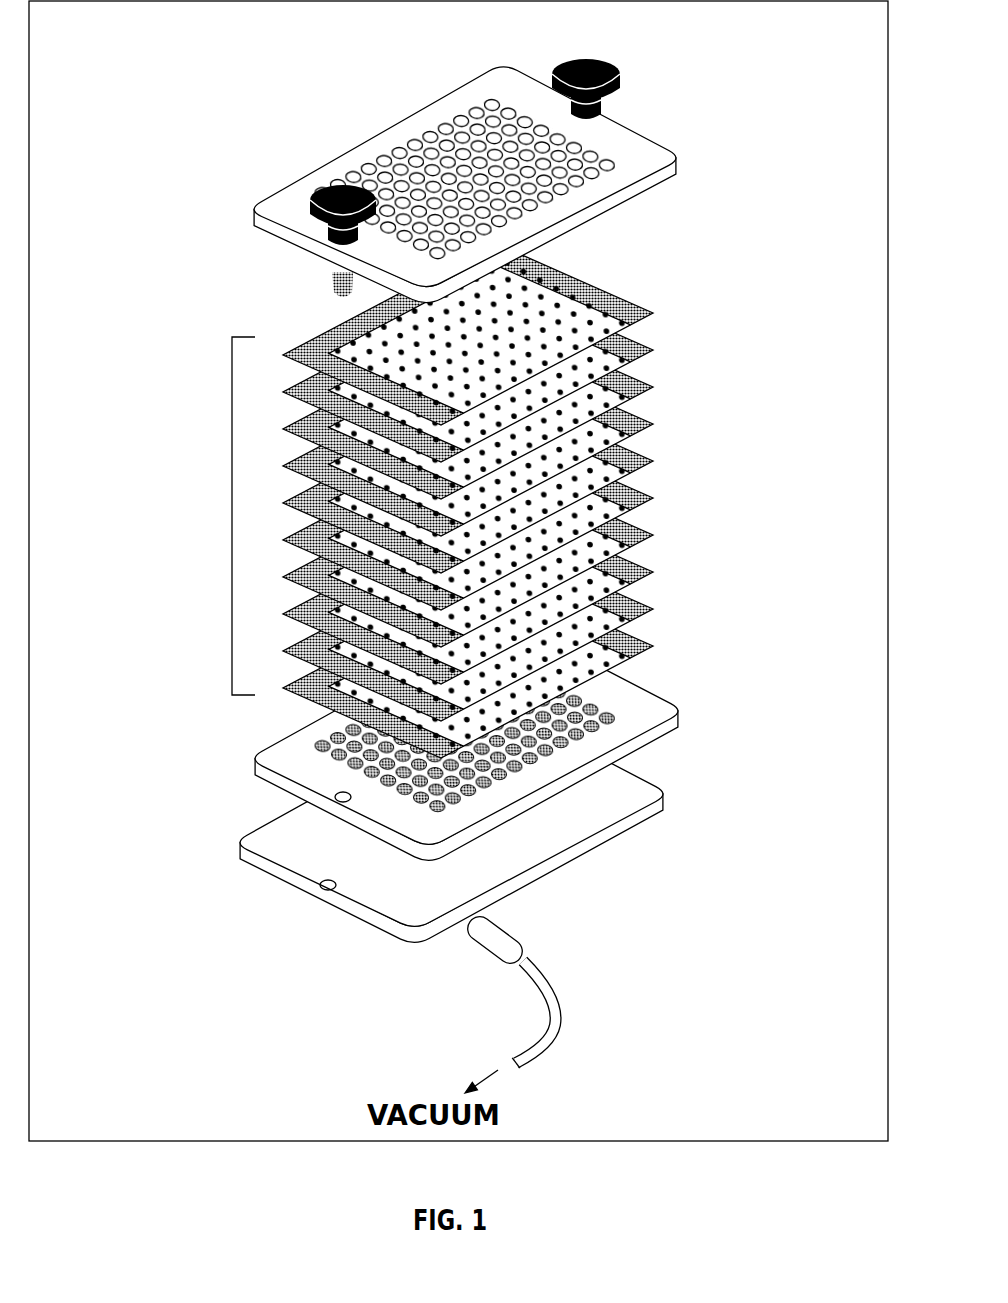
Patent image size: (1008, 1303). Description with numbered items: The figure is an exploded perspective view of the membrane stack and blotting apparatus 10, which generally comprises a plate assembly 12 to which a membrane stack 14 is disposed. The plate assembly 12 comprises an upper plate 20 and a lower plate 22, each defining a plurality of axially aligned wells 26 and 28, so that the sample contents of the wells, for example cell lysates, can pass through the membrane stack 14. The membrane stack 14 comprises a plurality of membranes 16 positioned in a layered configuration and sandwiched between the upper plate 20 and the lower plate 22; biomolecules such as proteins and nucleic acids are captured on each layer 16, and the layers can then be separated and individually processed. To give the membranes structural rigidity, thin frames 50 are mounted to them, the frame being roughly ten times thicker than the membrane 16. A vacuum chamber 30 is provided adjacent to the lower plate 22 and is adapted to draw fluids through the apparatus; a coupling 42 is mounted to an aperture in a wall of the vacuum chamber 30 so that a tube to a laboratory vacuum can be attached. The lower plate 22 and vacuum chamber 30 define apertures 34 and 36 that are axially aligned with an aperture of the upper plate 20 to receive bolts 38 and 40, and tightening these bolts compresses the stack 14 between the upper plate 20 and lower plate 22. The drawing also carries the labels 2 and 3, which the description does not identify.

The membrane 2 is at (285, 354).
The alignment pin 3 is at (350, 243).
The apparatus 10 is at (185, 255).
The plate assembly 12 is at (679, 788).
The membrane stack 14 is at (452, 500).
The membranes 16 is at (607, 582).
The upper plate 20 is at (278, 234).
The lower plate 22 is at (263, 777).
The wells 26 is at (443, 127).
The wells 28 is at (610, 720).
The vacuum chamber 30 is at (248, 870).
The aperture 34 is at (336, 797).
The aperture 36 is at (326, 890).
The bolt 38 is at (618, 65).
The bolt 40 is at (326, 222).
The coupling 42 is at (512, 933).
The frame 50 is at (650, 382).